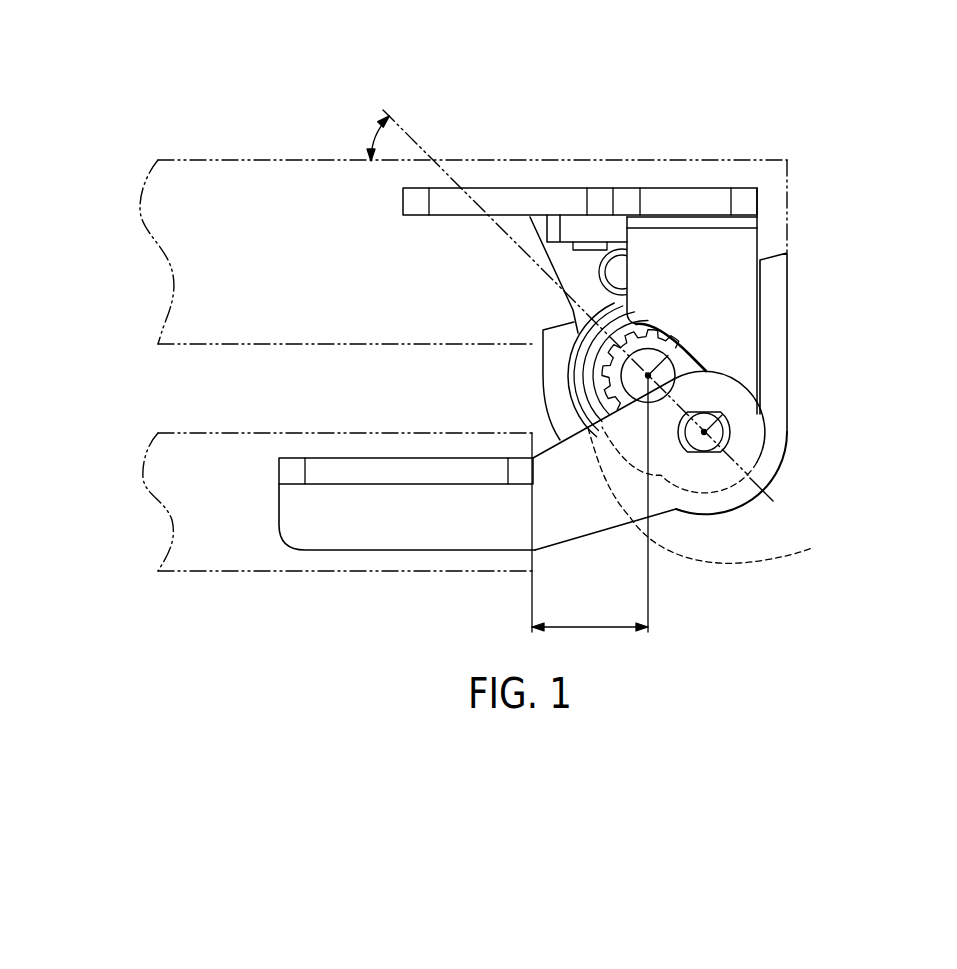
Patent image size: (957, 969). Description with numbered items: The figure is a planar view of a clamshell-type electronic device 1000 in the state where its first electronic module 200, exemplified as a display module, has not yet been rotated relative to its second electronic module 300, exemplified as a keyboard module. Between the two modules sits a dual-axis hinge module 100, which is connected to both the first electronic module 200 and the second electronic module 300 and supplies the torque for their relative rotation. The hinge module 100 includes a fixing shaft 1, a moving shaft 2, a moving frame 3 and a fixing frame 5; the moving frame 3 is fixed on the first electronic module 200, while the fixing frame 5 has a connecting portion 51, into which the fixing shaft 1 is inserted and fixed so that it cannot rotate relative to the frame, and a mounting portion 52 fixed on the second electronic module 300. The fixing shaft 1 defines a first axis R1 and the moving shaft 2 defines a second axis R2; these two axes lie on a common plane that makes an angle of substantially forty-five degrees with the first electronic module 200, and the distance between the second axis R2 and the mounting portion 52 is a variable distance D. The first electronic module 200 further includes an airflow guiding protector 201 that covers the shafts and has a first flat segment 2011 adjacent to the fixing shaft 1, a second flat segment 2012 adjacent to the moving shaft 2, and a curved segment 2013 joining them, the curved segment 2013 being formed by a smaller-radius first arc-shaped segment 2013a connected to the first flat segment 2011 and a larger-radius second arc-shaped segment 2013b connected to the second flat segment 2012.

The clamshell-type electronic device 1000 is at (198, 66).
The first electronic module 200 is at (274, 160).
The second electronic module 300 is at (233, 573).
The dual-axis hinge module 100 is at (760, 228).
The moving frame 3 is at (668, 188).
The first flat segment 2011 is at (773, 313).
The second flat segment 2012 is at (557, 372).
The airflow guiding protector 201 is at (787, 422).
The curved segment 2013 is at (772, 497).
The first arc-shaped segment 2013a is at (762, 473).
The second arc-shaped segment 2013b is at (808, 548).
The moving shaft 2 is at (671, 361).
The fixing shaft 1 is at (721, 432).
The fixing frame 5 is at (278, 505).
The connecting portion 51 is at (738, 402).
The mounting portion 52 is at (370, 472).
The first axis R1 is at (720, 400).
The second axis R2 is at (666, 333).
The variable distance D is at (590, 504).